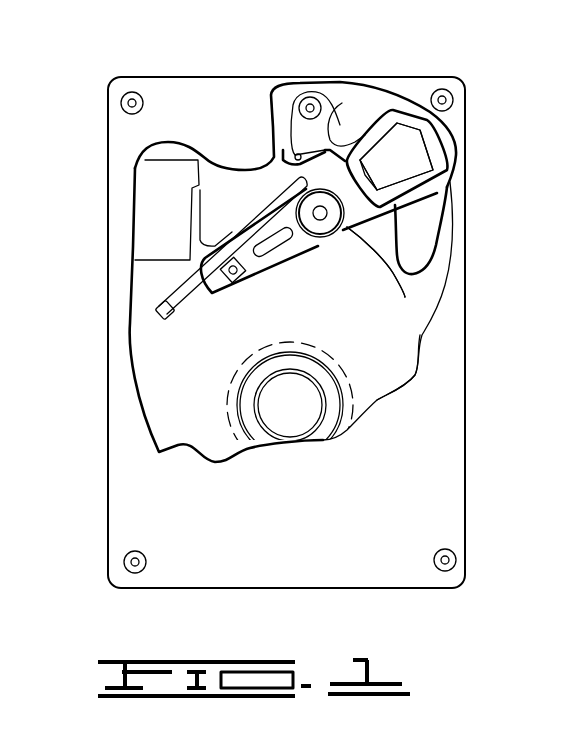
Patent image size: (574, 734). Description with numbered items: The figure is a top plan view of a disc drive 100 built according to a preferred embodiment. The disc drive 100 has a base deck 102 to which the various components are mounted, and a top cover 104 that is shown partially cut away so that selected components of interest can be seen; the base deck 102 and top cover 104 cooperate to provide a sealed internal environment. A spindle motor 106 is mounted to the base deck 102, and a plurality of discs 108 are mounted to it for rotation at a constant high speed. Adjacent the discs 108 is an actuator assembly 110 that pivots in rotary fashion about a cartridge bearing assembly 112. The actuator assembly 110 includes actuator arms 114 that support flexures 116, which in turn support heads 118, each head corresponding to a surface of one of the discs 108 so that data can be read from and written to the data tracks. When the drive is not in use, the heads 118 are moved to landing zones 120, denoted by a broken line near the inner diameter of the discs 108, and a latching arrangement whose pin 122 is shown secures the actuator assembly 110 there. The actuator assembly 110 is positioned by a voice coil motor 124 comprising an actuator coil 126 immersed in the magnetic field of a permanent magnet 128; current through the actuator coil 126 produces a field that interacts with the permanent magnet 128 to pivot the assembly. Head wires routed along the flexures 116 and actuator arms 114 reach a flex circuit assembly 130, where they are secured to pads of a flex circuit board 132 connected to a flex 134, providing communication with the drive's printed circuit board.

The disc drive 100 is at (119, 67).
The base deck 102 is at (151, 288).
The top cover 104 is at (158, 484).
The spindle motor 106 is at (282, 412).
The discs 108 is at (393, 357).
The actuator assembly 110 is at (291, 257).
The cartridge bearing assembly 112 is at (405, 297).
The actuator arms 114 is at (252, 272).
The flexures 116 is at (193, 303).
The heads 118 is at (163, 322).
The landing zones 120 is at (218, 396).
The latching arrangement pin 122 is at (275, 152).
The voice coil motor 124 is at (363, 112).
The actuator coil 126 is at (437, 152).
The permanent magnet 128 is at (342, 116).
The flex circuit assembly 130 is at (267, 205).
The flex circuit board 132 is at (293, 157).
The flex 134 is at (160, 176).